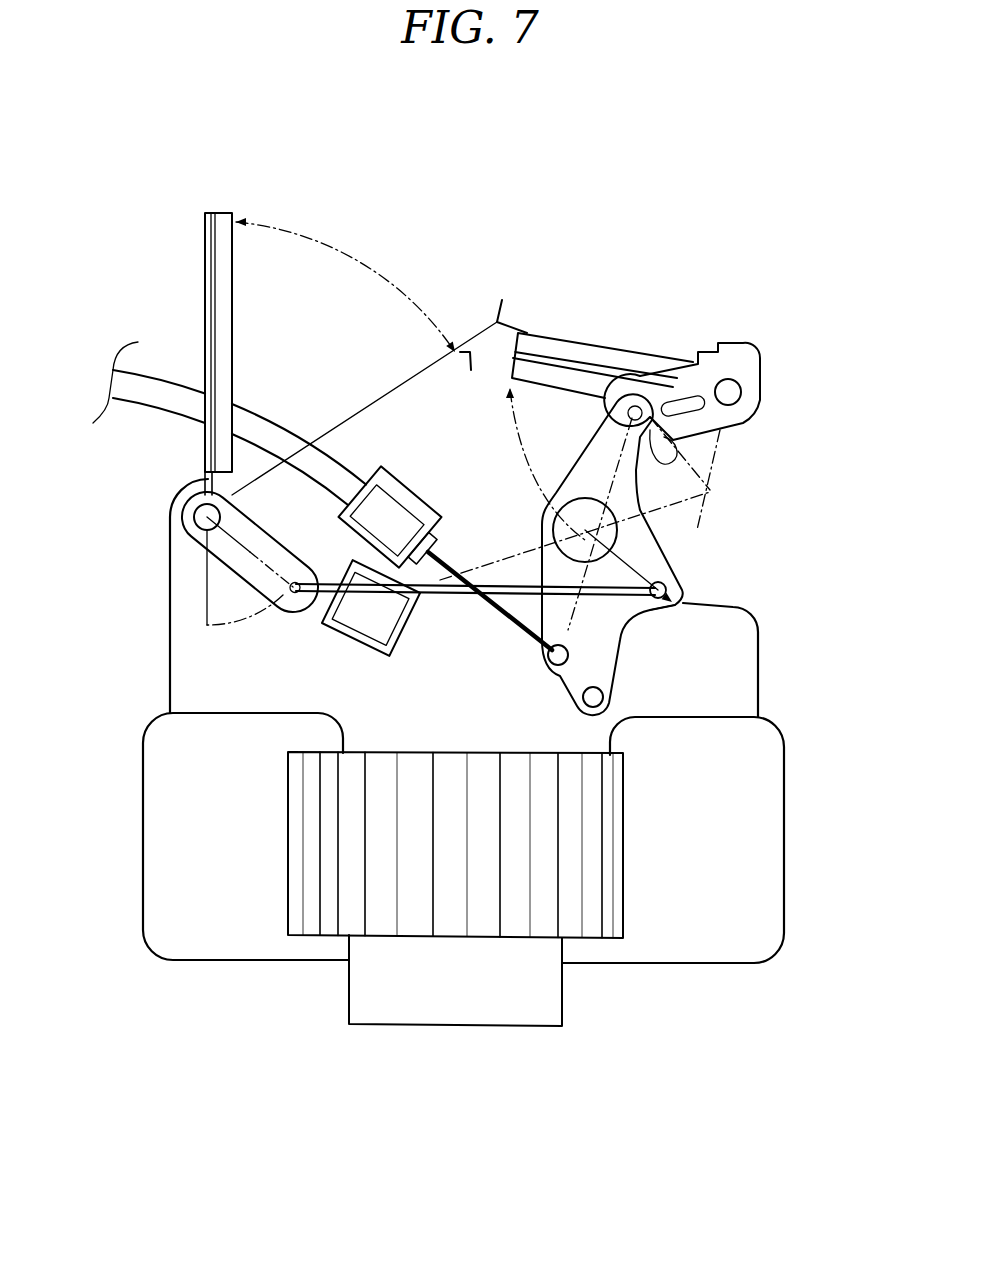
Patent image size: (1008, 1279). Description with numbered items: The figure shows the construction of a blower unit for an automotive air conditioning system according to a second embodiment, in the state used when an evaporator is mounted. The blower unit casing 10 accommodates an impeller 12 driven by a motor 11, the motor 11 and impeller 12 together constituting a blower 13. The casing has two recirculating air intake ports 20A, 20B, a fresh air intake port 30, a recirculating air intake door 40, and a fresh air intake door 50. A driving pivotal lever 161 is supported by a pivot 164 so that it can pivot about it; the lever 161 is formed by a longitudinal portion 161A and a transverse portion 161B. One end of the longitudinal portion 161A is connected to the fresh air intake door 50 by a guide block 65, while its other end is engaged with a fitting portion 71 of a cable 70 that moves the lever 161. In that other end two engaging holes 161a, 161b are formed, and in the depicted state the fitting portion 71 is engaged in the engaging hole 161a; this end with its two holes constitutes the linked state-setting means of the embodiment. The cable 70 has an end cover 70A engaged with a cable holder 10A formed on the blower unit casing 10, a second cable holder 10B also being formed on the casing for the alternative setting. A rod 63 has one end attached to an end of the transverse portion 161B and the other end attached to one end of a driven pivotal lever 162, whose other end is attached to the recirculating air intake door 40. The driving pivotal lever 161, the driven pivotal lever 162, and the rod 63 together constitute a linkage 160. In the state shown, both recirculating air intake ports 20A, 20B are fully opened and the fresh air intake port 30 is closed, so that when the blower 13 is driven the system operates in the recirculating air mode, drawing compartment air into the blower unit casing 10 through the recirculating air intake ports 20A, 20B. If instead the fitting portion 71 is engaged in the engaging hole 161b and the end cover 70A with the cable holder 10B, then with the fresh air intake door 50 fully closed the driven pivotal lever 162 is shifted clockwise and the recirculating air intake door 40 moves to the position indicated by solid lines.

The blower unit casing 10 is at (776, 692).
The cable holder 10A is at (428, 495).
The cable holder 10B is at (357, 650).
The motor 11 is at (563, 985).
The impeller 12 is at (625, 862).
The blower 13 is at (524, 1048).
The recirculating air intake port 20A is at (737, 440).
The recirculating air intake port 20B is at (452, 352).
The fresh air intake port 30 is at (557, 435).
The recirculating air intake door 40 is at (205, 287).
The fresh air intake door 50 is at (620, 346).
The rod 63 is at (442, 598).
The guide block 65 is at (728, 434).
The cable 70 is at (152, 433).
The end cover 70A is at (372, 505).
The fitting portion 71 is at (524, 632).
The linkage 160 is at (570, 328).
The driving pivotal lever 161 is at (625, 652).
The longitudinal portion 161A is at (636, 487).
The transverse portion 161B is at (670, 606).
The engaging hole 161a is at (551, 672).
The engaging hole 161b is at (612, 712).
The driven pivotal lever 162 is at (233, 556).
The pivot 164 is at (620, 537).